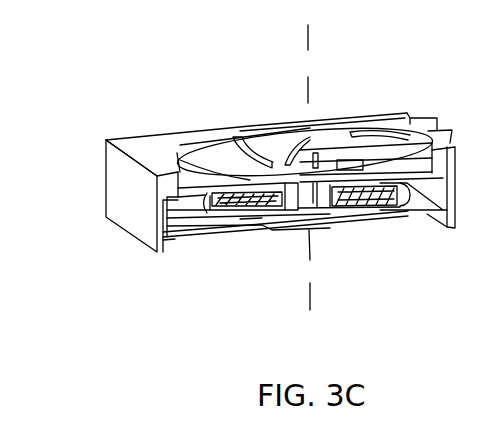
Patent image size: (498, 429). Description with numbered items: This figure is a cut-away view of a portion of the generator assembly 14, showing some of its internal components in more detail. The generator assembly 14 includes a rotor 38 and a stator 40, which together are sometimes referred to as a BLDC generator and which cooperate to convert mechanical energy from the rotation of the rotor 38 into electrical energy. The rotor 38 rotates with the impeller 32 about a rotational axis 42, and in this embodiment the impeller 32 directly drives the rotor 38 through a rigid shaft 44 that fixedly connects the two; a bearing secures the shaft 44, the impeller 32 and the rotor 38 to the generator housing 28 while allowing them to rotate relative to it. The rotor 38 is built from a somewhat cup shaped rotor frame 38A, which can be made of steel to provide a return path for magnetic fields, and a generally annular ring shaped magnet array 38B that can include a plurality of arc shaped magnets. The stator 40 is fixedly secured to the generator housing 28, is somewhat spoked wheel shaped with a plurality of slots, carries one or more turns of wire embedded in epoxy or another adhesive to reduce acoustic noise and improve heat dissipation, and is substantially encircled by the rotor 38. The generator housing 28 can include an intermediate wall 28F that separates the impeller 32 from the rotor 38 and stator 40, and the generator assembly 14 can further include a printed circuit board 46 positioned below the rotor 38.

The generator assembly 14 is at (390, 84).
The generator housing 28 is at (135, 143).
The intermediate wall 28F is at (205, 210).
The impeller 32 is at (215, 157).
The rotor 38 is at (273, 304).
The rotor frame 38A is at (250, 213).
The magnet array 38B is at (215, 207).
The stator 40 is at (368, 195).
The rotational axis 42 is at (307, 43).
The shaft 44 is at (312, 208).
The printed circuit board 46 is at (173, 233).